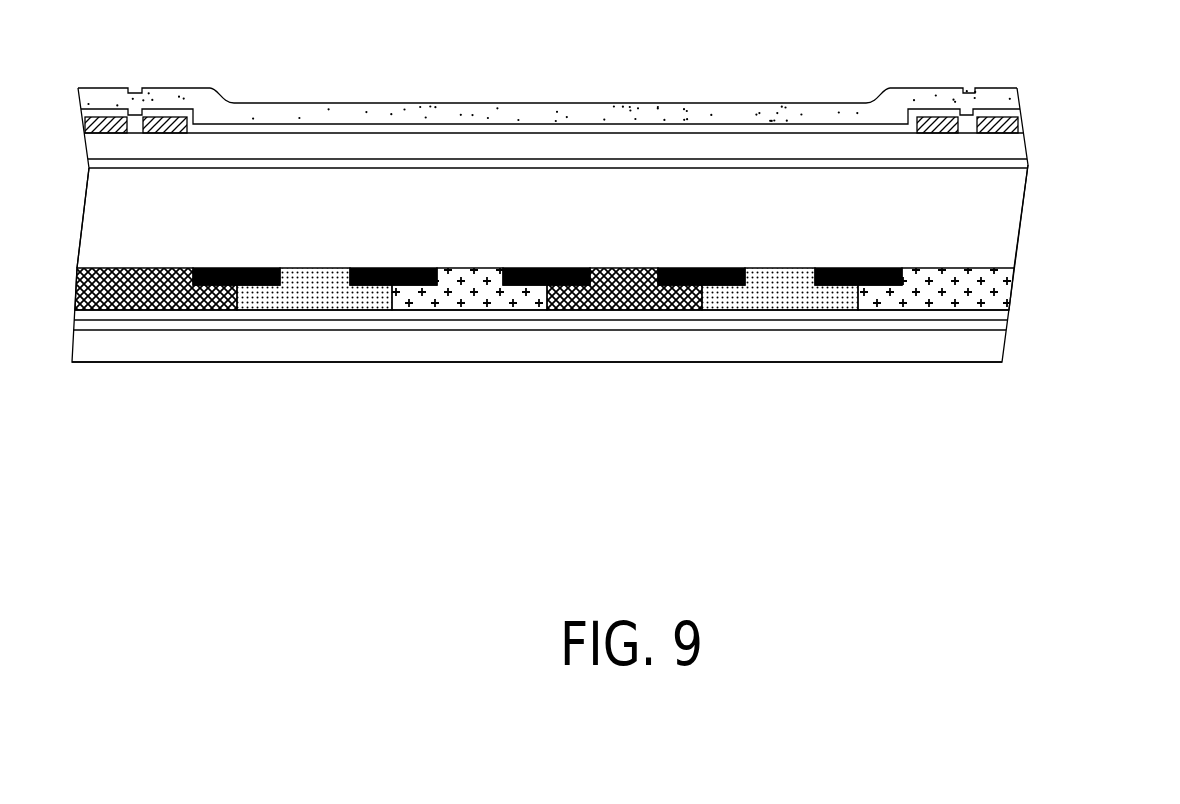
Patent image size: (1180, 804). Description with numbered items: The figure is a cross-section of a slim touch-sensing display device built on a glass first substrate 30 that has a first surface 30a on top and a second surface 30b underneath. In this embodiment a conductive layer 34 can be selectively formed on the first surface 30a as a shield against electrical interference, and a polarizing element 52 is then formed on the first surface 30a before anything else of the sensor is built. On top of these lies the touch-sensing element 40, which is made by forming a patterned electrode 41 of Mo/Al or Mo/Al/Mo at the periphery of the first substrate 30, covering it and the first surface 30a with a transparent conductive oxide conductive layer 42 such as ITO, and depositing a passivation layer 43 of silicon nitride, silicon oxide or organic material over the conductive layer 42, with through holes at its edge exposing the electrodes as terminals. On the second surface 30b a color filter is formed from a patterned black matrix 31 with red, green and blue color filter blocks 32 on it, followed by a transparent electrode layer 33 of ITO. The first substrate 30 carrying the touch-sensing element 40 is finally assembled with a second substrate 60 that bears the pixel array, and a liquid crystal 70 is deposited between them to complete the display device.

The first substrate 30 is at (588, 213).
The first surface 30a is at (832, 170).
The second surface 30b is at (953, 268).
The patterned black matrix 31 is at (829, 288).
The color filter blocks 32 is at (590, 339).
The transparent electrode layer 33 is at (740, 315).
The conductive layer 34 is at (1030, 172).
The touch-sensing element 40 is at (625, 104).
The patterned electrode 41 is at (596, 136).
The conductive layer 42 is at (1020, 110).
The passivation layer 43 is at (1020, 92).
The polarizing element 52 is at (1025, 157).
The second substrate 60 is at (1000, 350).
The liquid crystal 70 is at (1010, 323).